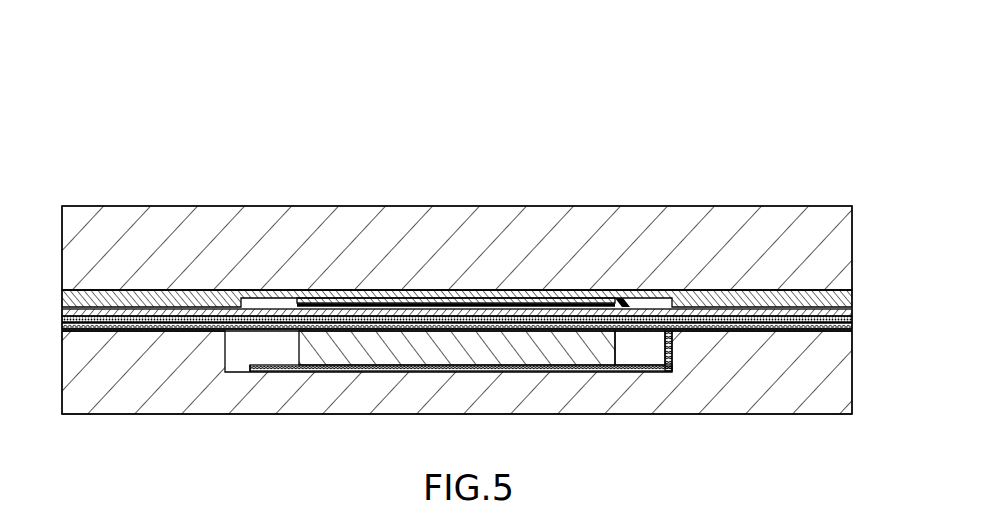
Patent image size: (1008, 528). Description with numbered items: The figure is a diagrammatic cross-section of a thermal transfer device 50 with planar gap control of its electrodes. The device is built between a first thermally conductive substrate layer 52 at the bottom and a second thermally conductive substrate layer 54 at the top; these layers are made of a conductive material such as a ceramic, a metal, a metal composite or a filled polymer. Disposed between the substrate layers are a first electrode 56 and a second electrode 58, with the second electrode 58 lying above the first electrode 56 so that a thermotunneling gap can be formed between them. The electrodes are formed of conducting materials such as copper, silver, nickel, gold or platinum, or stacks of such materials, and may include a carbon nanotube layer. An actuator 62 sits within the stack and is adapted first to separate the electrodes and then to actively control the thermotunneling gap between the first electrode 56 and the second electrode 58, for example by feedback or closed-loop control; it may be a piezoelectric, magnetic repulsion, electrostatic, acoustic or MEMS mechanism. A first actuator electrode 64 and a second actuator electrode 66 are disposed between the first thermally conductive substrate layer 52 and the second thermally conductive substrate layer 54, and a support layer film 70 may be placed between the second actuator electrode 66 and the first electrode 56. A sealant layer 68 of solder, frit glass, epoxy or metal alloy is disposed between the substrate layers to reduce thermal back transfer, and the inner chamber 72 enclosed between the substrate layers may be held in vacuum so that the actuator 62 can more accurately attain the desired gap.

The thermal transfer device 50 is at (752, 72).
The first thermally conductive substrate layer 52 is at (162, 414).
The second thermally conductive substrate layer 54 is at (173, 206).
The first electrode 56 is at (62, 309).
The second electrode 58 is at (852, 313).
The actuator 62 is at (388, 353).
The first actuator electrode 64 is at (299, 305).
The second actuator electrode 66 is at (62, 331).
The sealant layer 68 is at (852, 298).
The support layer film 70 is at (62, 320).
The inner chamber 72 is at (645, 350).